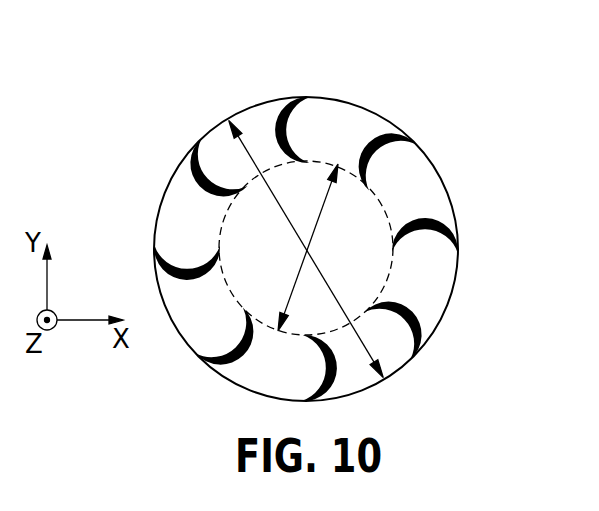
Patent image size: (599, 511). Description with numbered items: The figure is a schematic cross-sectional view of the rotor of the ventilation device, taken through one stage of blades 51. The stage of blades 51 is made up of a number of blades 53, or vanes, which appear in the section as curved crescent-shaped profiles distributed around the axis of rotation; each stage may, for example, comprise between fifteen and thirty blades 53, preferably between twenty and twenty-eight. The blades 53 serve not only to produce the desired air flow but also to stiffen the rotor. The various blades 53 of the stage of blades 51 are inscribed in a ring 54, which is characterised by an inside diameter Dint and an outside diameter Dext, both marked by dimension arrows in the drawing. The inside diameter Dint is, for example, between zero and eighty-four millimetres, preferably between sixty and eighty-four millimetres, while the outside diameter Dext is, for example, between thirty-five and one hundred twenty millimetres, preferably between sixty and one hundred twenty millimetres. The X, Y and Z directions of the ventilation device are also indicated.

The stage of blades 51 is at (366, 84).
The blade 53 is at (298, 100).
The ring 54 is at (255, 128).
The inside diameter Dint is at (327, 207).
The outside diameter Dext is at (367, 350).